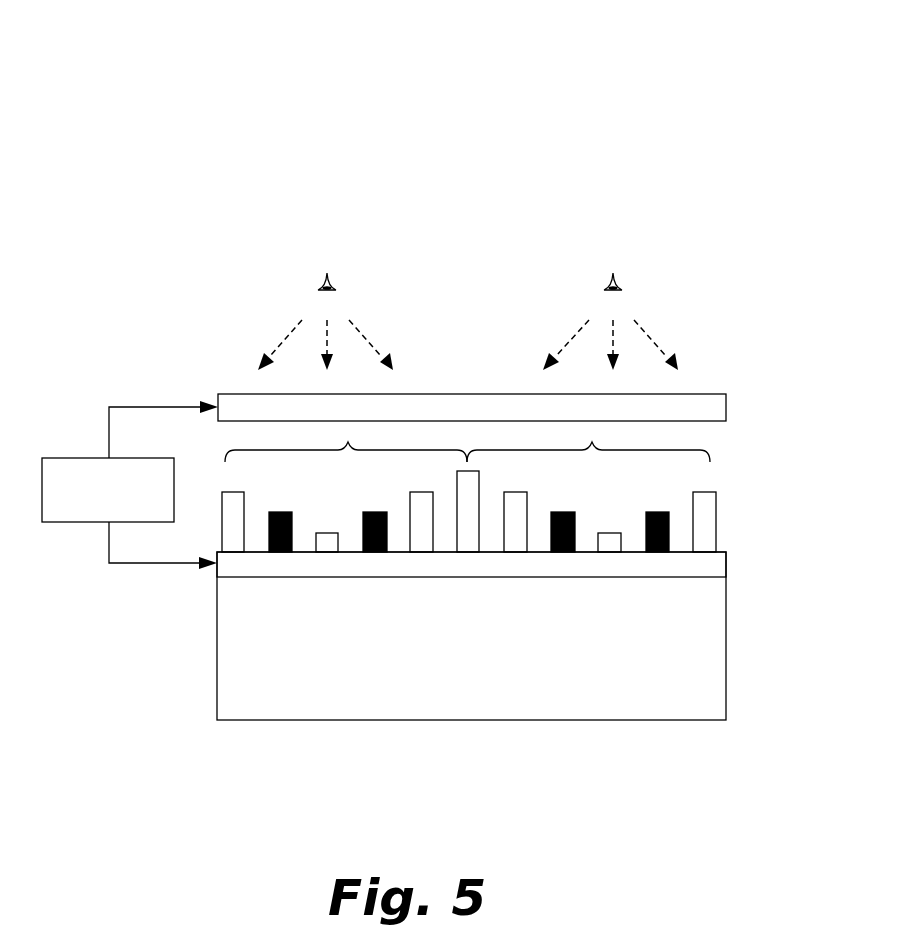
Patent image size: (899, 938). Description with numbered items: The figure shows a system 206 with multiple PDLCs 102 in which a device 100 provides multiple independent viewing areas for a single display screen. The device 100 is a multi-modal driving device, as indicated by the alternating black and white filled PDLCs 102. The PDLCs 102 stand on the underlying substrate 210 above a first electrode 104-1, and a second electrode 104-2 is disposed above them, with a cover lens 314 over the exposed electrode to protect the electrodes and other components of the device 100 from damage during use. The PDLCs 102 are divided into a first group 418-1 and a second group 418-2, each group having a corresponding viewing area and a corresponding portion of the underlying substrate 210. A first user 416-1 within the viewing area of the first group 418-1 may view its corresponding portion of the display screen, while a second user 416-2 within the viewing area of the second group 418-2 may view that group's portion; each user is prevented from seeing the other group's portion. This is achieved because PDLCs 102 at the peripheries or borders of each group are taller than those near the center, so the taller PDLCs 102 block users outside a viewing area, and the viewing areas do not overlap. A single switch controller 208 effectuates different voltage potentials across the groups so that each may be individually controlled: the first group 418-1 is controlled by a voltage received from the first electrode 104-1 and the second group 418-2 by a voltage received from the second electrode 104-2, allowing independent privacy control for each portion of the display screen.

The system 206 is at (212, 124).
The device 100 is at (430, 268).
The first user 416-1 is at (318, 285).
The second user 416-2 is at (605, 287).
The second electrode 104-2 is at (247, 407).
The cover lens 314 is at (504, 400).
The first group 418-1 is at (348, 443).
The second group 418-2 is at (595, 442).
The switch controller 208 is at (77, 488).
The PDLC 102 is at (233, 522).
The first electrode 104-1 is at (250, 568).
The underlying substrate 210 is at (568, 682).